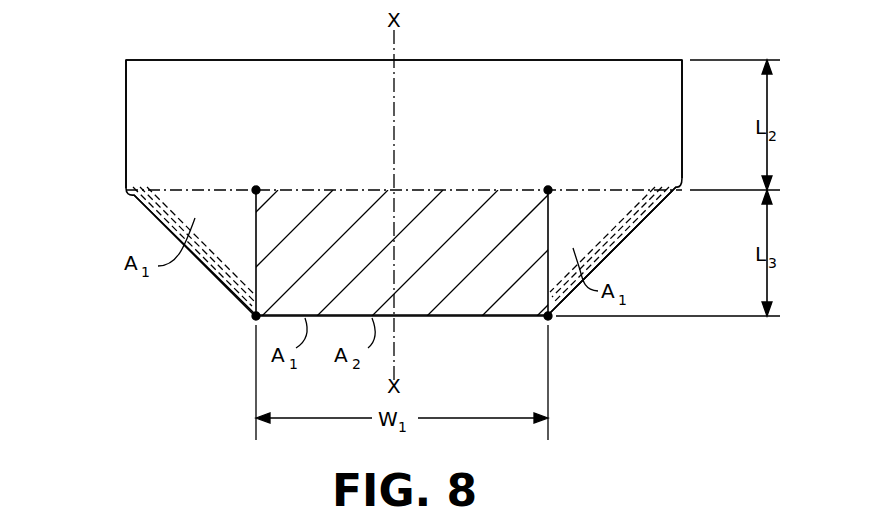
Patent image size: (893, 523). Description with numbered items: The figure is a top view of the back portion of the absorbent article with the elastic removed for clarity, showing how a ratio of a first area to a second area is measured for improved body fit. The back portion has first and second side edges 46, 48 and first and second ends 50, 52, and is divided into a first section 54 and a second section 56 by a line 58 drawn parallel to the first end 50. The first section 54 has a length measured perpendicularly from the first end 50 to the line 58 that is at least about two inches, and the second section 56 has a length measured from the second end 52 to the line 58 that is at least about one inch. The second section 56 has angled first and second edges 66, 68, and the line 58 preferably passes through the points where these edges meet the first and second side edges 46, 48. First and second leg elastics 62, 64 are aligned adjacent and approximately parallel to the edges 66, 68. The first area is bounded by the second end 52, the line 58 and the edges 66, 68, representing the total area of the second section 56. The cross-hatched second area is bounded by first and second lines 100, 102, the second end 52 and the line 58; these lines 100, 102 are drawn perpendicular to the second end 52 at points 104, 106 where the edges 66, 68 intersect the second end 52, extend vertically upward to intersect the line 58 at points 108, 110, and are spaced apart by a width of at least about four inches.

The first side edge 46 is at (126, 134).
The second side edge 48 is at (682, 128).
The first end 50 is at (518, 60).
The second end 52 is at (452, 318).
The first section 54 is at (598, 62).
The second section 56 is at (612, 227).
The line 58 is at (578, 190).
The first leg elastic 62 is at (150, 206).
The second leg elastic 64 is at (644, 208).
The first edge 66 is at (210, 270).
The second edge 68 is at (608, 256).
The first line 100 is at (256, 248).
The second line 102 is at (548, 225).
The point 104 is at (250, 323).
The point 106 is at (553, 320).
The point 108 is at (256, 190).
The point 110 is at (548, 190).